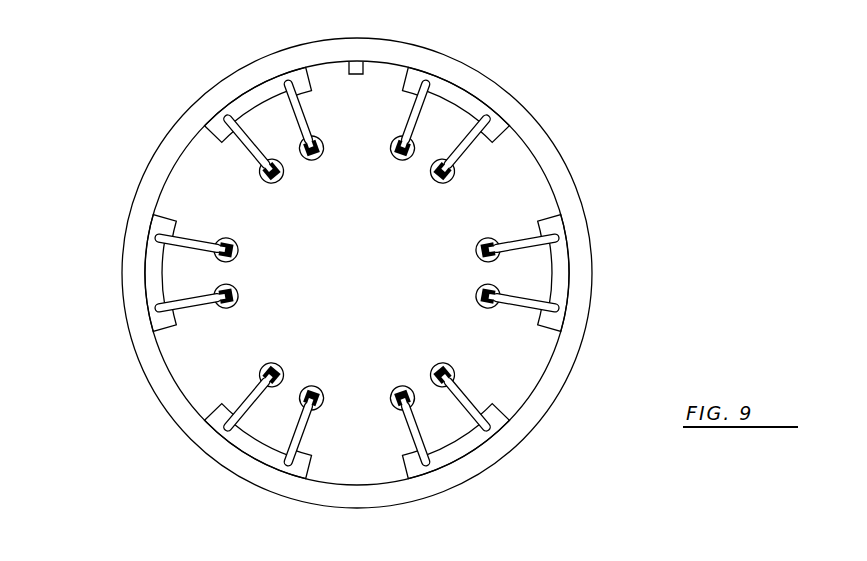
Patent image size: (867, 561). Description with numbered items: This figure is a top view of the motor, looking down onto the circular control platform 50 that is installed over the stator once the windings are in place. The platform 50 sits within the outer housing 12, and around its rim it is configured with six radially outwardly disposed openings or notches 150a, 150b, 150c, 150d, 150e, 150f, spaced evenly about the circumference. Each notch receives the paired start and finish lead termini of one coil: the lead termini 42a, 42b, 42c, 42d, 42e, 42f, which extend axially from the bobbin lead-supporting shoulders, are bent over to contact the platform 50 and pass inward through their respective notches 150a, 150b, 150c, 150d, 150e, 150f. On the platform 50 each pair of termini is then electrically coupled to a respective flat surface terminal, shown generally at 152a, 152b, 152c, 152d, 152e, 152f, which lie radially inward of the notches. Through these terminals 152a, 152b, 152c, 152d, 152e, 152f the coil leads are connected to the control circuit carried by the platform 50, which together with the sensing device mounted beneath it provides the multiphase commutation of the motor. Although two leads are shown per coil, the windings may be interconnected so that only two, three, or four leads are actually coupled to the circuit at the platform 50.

The connector shell 12 is at (581, 196).
The control platform 50 is at (383, 88).
The notch 150a is at (562, 272).
The notch 150b is at (468, 98).
The notch 150c is at (252, 102).
The notch 150d is at (150, 278).
The notch 150e is at (257, 452).
The notch 150f is at (460, 448).
The lead terminus 42a is at (518, 318).
The lead terminus 42b is at (484, 158).
The lead terminus 42c is at (315, 113).
The lead terminus 42d is at (190, 232).
The lead terminus 42e is at (237, 390).
The lead terminus 42f is at (400, 432).
The flat surface terminal 152a is at (484, 275).
The flat surface terminal 152b is at (419, 175).
The flat surface terminal 152c is at (297, 177).
The flat surface terminal 152d is at (236, 277).
The flat surface terminal 152e is at (298, 368).
The flat surface terminal 152f is at (416, 373).